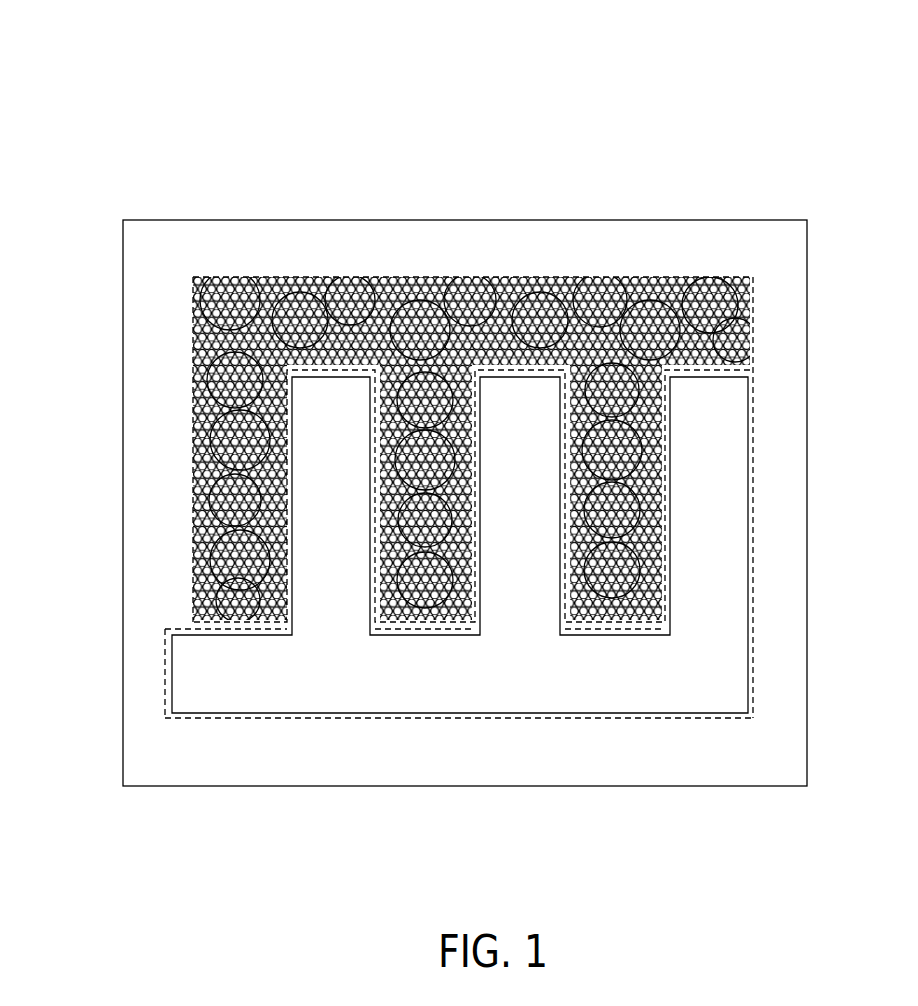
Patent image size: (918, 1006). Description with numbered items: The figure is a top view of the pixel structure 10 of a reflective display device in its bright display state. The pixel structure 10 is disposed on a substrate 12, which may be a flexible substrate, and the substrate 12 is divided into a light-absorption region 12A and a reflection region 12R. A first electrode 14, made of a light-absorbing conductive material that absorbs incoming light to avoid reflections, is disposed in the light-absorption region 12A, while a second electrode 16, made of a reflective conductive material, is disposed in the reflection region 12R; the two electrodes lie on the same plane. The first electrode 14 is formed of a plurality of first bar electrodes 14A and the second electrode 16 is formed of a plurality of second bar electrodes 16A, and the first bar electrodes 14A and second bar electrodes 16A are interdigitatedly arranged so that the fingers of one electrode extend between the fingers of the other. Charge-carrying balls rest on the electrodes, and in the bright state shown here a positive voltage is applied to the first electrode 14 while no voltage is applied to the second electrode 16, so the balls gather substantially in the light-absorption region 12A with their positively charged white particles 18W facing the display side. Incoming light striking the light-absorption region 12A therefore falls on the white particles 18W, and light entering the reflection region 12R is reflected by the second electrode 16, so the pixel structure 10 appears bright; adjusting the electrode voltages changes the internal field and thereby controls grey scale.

The pixel structure 10 is at (767, 90).
The substrate 12 is at (807, 698).
The light-absorption region 12A is at (275, 277).
The reflection region 12R is at (228, 718).
The first electrode 14 is at (752, 277).
The first bar electrodes 14A is at (193, 535).
The second electrode 16 is at (380, 713).
The second bar electrodes 16A is at (753, 530).
The white particles 18W is at (193, 413).